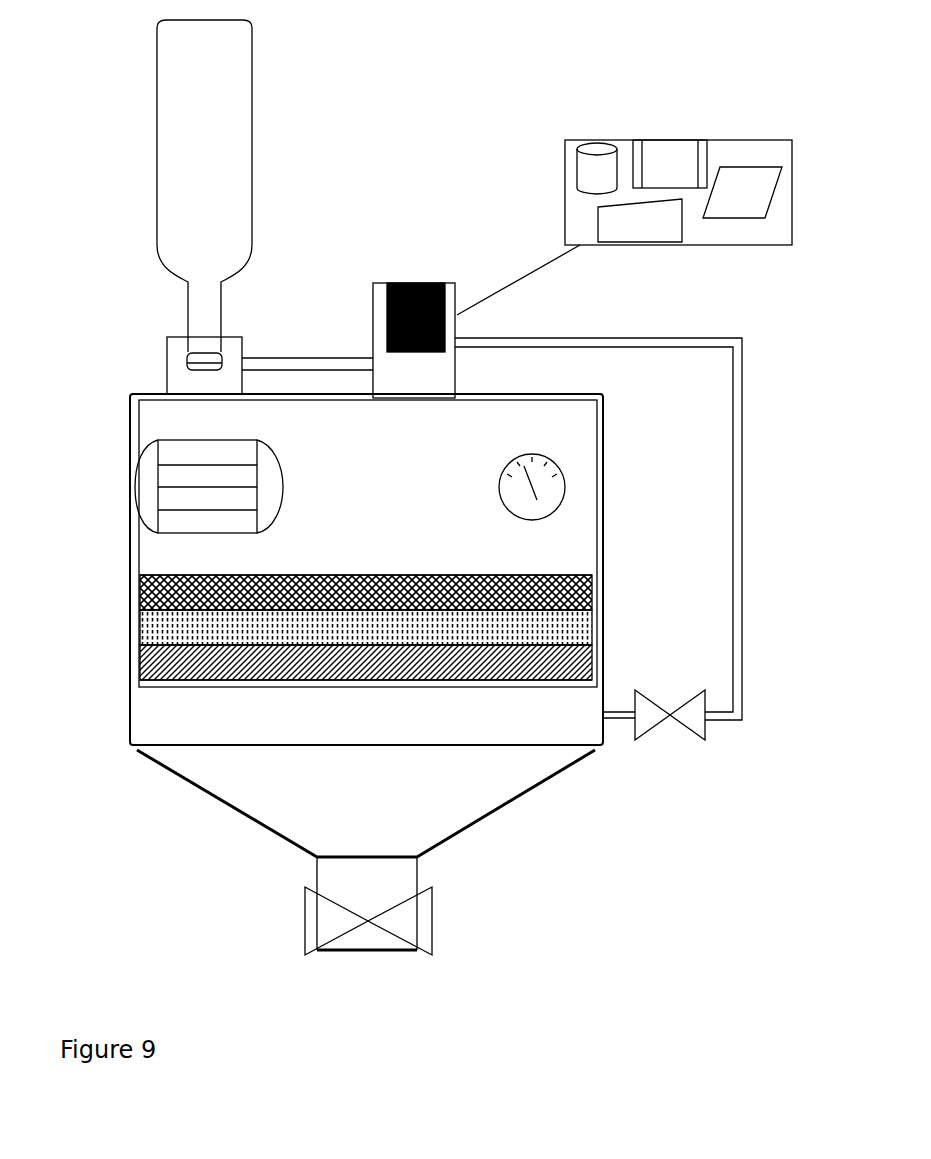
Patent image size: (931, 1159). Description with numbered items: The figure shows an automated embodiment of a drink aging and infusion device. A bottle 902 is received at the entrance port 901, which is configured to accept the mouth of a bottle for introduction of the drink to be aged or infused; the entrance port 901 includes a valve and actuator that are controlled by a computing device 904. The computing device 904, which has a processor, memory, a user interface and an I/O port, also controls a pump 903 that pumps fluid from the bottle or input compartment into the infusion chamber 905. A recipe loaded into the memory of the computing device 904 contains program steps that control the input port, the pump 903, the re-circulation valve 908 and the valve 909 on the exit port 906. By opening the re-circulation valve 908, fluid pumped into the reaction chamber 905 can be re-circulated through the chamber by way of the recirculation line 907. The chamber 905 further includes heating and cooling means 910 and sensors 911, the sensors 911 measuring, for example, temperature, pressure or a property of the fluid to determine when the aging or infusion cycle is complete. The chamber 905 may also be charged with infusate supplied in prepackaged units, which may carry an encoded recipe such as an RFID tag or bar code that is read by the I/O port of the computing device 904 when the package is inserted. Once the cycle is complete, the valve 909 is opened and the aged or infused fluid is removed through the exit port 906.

The entrance port 901 is at (163, 371).
The bottle / reservoir 902 is at (160, 218).
The pump 903 is at (422, 280).
The computing device 904 is at (672, 133).
The infusion chamber 905 is at (610, 526).
The exit port 906 is at (380, 957).
The return line / pipe 907 is at (745, 430).
The re-circulation valve 908 is at (708, 737).
The valve on the exit port 909 is at (436, 932).
The heating and cooling means 910 is at (128, 503).
The sensors 911 is at (569, 487).